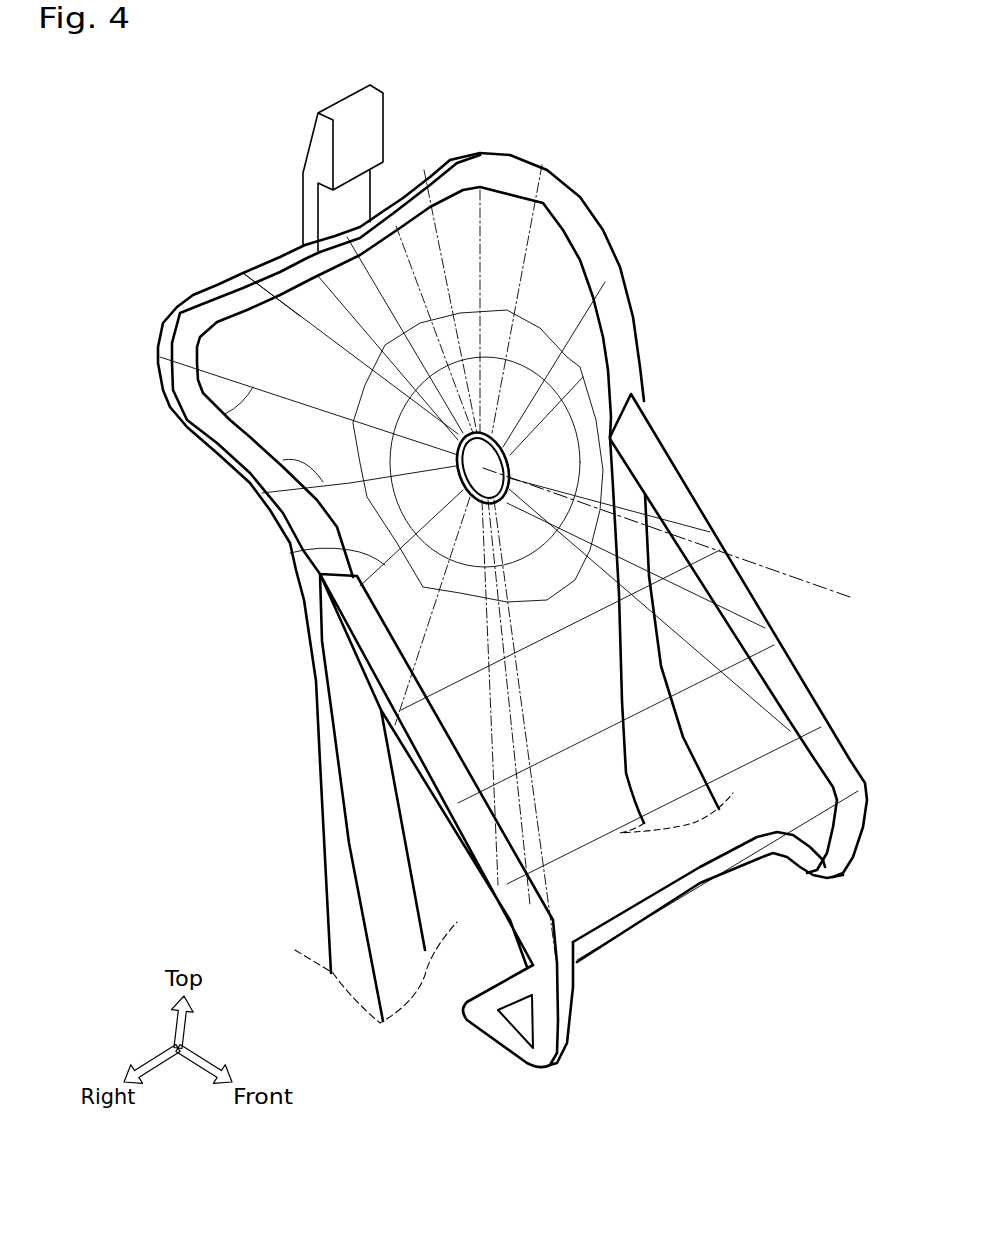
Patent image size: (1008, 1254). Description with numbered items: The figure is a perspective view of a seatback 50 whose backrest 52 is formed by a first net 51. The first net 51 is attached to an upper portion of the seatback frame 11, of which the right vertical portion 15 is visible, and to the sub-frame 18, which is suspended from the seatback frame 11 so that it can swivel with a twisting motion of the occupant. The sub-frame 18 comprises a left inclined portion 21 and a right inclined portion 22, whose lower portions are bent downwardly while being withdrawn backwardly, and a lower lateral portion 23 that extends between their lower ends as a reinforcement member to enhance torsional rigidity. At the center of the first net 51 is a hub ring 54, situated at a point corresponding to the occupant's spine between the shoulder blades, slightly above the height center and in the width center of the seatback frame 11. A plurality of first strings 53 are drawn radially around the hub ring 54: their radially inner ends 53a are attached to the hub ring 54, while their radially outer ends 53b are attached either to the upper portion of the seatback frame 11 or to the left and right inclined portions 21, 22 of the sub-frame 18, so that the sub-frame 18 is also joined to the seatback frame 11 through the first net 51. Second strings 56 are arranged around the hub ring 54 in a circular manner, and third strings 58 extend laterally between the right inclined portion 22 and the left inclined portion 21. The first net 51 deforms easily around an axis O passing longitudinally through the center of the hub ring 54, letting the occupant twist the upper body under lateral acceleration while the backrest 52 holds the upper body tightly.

The seatback frame 11 is at (506, 140).
The right vertical portion 15 is at (587, 250).
The sub-frame 18 is at (662, 453).
The left inclined portion 21 is at (673, 492).
The right inclined portion 22 is at (393, 668).
The lower lateral portion 23 is at (523, 972).
The seatback 50 is at (690, 258).
The first net 51 is at (546, 238).
The backrest 52 is at (608, 366).
The first strings 53 is at (322, 340).
The radially inner ends 53a is at (380, 358).
The radially outer ends 53b is at (245, 273).
The hub ring 54 is at (502, 447).
The second strings 56 is at (483, 307).
The third strings 58 is at (577, 610).
The axis O is at (787, 575).